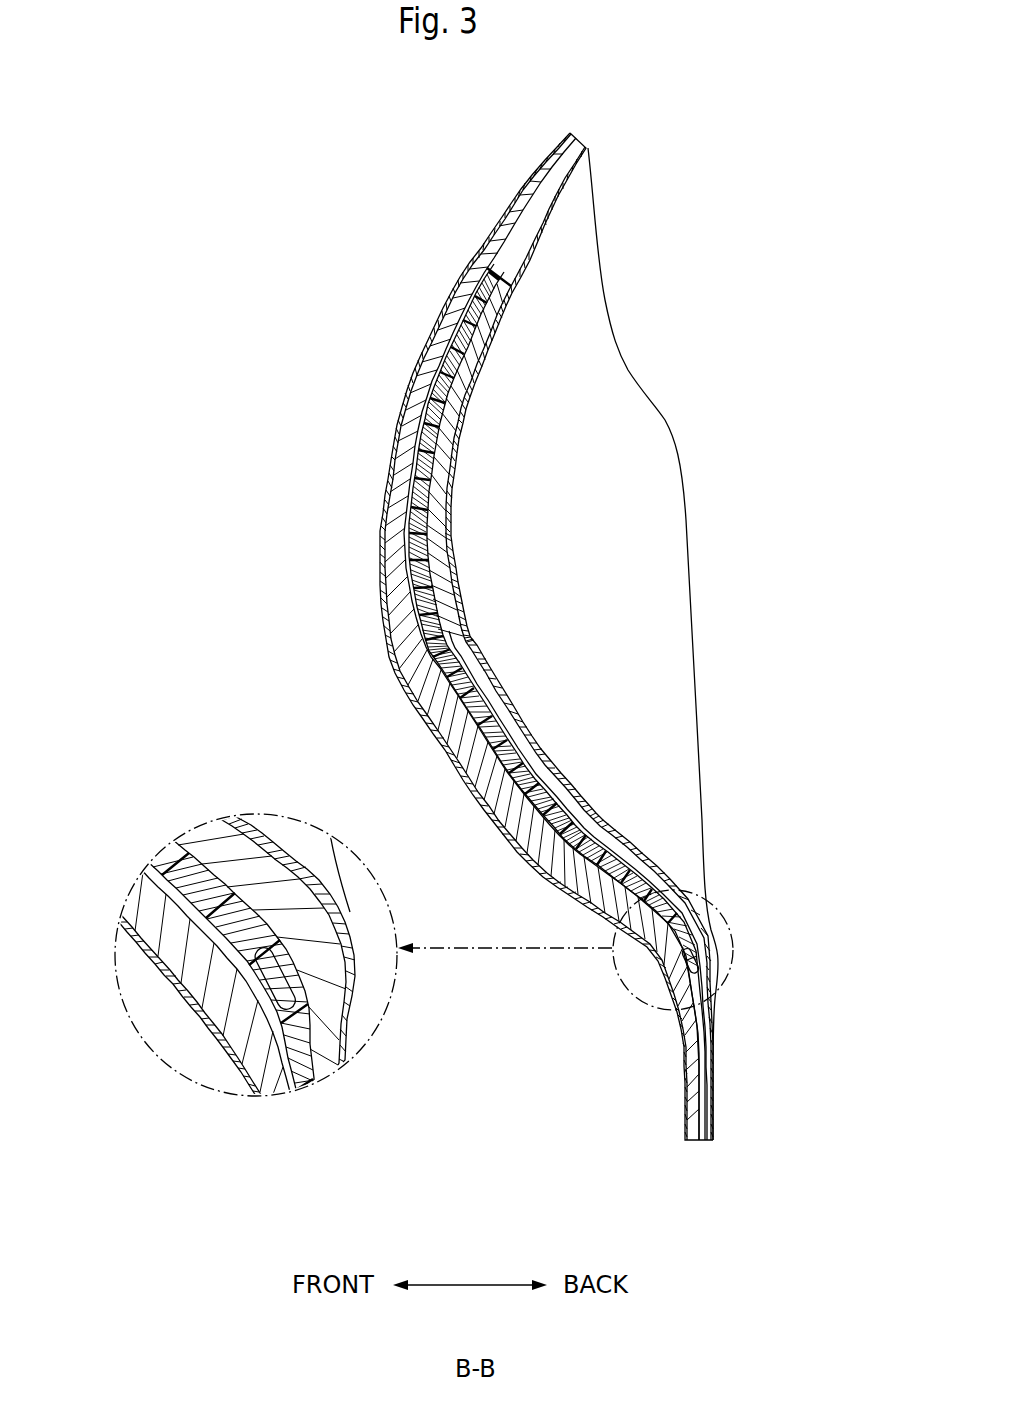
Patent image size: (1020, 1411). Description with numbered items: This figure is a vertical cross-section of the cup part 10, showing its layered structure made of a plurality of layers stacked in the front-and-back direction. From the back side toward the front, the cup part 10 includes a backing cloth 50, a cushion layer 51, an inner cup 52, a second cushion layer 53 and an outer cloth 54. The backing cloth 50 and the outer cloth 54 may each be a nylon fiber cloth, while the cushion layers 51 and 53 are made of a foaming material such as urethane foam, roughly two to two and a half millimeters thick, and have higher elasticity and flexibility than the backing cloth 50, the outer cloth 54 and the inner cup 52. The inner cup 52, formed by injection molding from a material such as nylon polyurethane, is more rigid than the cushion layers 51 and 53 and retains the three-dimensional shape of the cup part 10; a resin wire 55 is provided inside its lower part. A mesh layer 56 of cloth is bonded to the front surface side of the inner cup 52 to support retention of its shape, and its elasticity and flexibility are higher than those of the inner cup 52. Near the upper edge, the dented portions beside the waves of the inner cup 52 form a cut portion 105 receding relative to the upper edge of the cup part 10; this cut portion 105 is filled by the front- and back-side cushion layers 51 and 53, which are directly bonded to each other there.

The cup part 10 is at (512, 178).
The cut portion 105 is at (500, 235).
The backing cloth 50 is at (655, 536).
The cushion layer 51 is at (447, 435).
The inner cup 52 is at (452, 375).
The cushion layer 53 is at (390, 545).
The outer cloth 54 is at (380, 616).
The resin wire 55 is at (717, 985).
The mesh layer 56 is at (440, 705).